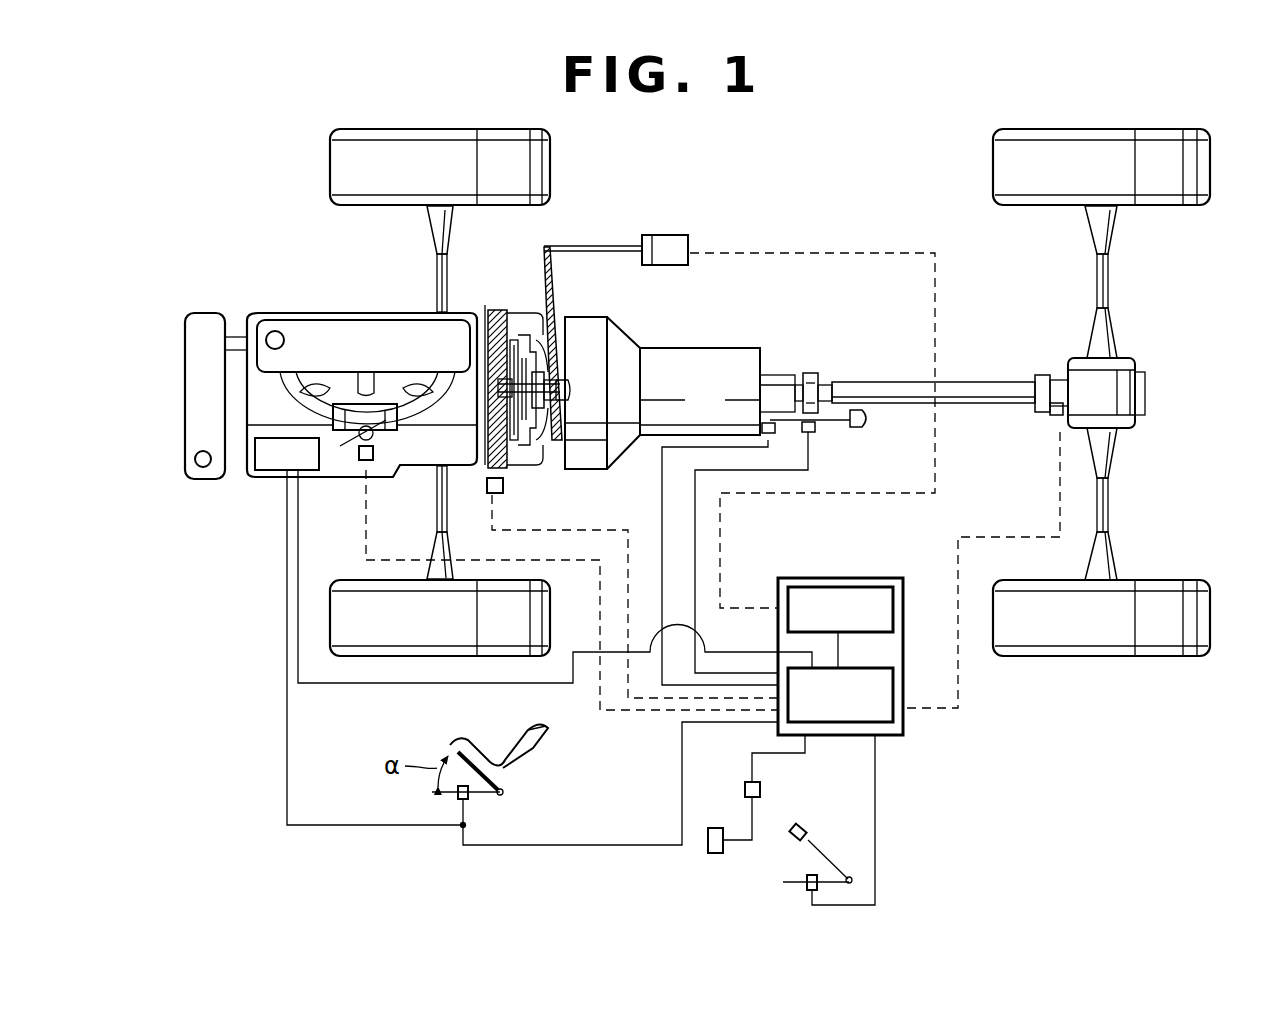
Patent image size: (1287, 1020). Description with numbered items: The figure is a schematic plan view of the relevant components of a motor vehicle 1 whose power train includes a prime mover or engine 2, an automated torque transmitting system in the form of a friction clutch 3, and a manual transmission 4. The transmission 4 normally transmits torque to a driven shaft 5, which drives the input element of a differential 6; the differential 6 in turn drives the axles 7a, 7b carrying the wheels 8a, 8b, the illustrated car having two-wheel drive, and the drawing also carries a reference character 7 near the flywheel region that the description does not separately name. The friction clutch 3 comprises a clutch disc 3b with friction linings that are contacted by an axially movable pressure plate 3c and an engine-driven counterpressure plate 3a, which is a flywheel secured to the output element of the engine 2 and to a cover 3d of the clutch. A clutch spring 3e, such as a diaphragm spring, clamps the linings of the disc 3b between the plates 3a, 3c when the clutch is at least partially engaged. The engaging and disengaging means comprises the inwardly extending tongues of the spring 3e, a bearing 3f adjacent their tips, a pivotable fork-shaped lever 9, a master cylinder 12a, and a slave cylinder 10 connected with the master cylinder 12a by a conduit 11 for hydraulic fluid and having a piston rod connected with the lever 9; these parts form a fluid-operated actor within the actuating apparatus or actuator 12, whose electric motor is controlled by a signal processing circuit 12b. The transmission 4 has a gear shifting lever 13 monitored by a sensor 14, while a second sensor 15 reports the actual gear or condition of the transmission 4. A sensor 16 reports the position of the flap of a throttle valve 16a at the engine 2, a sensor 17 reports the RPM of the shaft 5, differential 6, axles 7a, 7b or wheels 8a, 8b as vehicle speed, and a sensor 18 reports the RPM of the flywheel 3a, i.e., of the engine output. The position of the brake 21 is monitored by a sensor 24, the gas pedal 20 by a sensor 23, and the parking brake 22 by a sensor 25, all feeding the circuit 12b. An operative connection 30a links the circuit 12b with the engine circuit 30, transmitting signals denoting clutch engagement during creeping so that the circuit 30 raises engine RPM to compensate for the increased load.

The motor vehicle 1 is at (806, 148).
The prime mover 2 is at (300, 333).
The automated torque transmitting system 3 is at (563, 391).
The counterpressure plate 3a is at (508, 463).
The clutch disc 3b is at (524, 340).
The pressure plate 3c is at (533, 466).
The cover 3d is at (547, 452).
The clutch spring 3e is at (538, 354).
The bearing 3f is at (563, 398).
The manual transmission 4 is at (662, 393).
The driven shaft 5 is at (977, 385).
The differential 6 is at (1125, 390).
The flywheel 7 is at (488, 330).
The axle 7a is at (1105, 285).
The axle 7b is at (1105, 508).
The wheel 8a is at (1178, 170).
The wheel 8b is at (1178, 622).
The fork-shaped lever 9 is at (556, 275).
The slave cylinder 10 is at (668, 250).
The conduit 11 is at (755, 246).
The actuating apparatus 12 is at (840, 618).
The master cylinder 12a is at (840, 609).
The signal evaluating, analyzing and processing circuit 12b is at (840, 695).
The lever 13 is at (819, 386).
The sensor 14 is at (818, 432).
The second sensor 15 is at (777, 436).
The sensor 16 is at (357, 458).
The throttle valve 16a is at (355, 420).
The sensor 17 is at (1057, 418).
The sensor 18 is at (487, 488).
The gas pedal 20 is at (490, 780).
The brake 21 is at (752, 818).
The parking brake 22 is at (797, 878).
The sensor 23 is at (470, 795).
The sensor 24 is at (745, 786).
The sensor 25 is at (805, 888).
The engine circuit 30 is at (287, 454).
The operative connection 30a is at (410, 683).